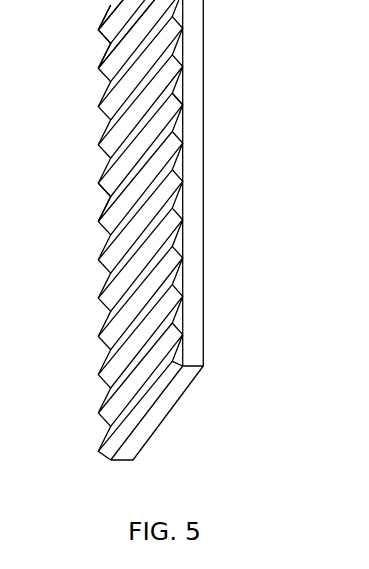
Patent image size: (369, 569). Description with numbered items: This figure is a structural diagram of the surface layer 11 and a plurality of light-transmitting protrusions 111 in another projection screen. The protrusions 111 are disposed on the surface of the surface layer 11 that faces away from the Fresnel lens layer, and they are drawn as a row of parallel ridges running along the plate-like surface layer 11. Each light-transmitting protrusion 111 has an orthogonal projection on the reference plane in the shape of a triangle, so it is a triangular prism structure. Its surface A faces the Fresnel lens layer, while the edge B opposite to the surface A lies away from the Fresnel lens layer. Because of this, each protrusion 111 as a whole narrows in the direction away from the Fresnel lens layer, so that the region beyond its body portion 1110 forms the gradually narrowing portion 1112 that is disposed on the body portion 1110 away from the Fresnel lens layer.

The surface layer 11 is at (192, 193).
The light-transmitting protrusion 111 is at (123, 62).
The body portion 1110 is at (183, 131).
The gradually narrowing portion 1112 is at (183, 43).
The surface A is at (183, 97).
The edge B is at (113, 195).